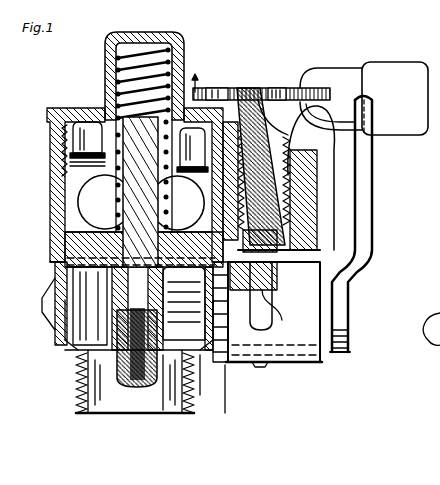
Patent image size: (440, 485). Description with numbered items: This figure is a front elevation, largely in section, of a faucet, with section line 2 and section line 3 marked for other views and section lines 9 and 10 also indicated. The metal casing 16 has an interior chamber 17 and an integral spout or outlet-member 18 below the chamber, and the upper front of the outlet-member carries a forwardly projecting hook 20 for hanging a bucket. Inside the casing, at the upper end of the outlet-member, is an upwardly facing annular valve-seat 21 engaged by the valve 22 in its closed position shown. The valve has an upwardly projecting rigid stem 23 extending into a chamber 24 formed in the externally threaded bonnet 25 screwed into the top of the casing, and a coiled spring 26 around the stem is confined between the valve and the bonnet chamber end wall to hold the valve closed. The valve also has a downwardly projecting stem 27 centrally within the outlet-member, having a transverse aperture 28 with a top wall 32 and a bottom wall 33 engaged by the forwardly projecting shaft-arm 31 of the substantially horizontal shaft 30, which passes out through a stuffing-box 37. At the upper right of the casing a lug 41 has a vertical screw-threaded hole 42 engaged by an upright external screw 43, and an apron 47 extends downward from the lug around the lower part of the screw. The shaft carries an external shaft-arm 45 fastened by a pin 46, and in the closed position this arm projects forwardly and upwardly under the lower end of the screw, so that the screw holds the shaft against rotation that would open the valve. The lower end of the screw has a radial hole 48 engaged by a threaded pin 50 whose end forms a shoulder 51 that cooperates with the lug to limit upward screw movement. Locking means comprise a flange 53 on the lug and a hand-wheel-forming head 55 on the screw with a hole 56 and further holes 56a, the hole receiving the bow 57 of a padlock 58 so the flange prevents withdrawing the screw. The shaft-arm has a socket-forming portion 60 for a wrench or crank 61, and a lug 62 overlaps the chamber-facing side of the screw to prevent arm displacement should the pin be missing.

The section line 2— 2 is at (266, 88).
The section line 3— 3 is at (143, 60).
The section line 9— 9 is at (262, 90).
The section line 10— 10 is at (288, 152).
The casing 16 is at (53, 178).
The chamber 17 is at (55, 200).
The outlet-member 18 is at (77, 393).
The hook 20 is at (432, 313).
The valve-seat 21 is at (78, 247).
The valve 22 is at (67, 236).
The stem 23 is at (120, 212).
The chamber 24 is at (116, 62).
The bonnet 25 is at (100, 107).
The coiled spring 26 is at (105, 80).
The stem 27 is at (107, 397).
The aperture 28 is at (125, 367).
The shaft 30 is at (238, 368).
The shaft-arm 31 is at (205, 383).
The top wall 32 is at (150, 310).
The bottom wall 33 is at (167, 397).
The stuffing-box 37 is at (219, 409).
The lug 41 is at (300, 172).
The screw-threaded hole 42 is at (298, 208).
The external screw 43 is at (300, 190).
The shaft-arm 45 is at (297, 363).
The pin 46 is at (260, 367).
The apron 47 is at (320, 228).
The radial hole 48 is at (276, 290).
The pin 50 is at (277, 282).
The shoulder 51 is at (205, 222).
The flange 53 is at (318, 148).
The hand-wheel-forming head 55 is at (213, 88).
The hole 56 is at (300, 88).
The holes 56a is at (238, 88).
The bow 57 is at (366, 61).
The padlock 58 is at (395, 98).
The socket-forming portion 60 is at (321, 362).
The wrench or crank 61 is at (352, 270).
The lug 62 is at (251, 296).